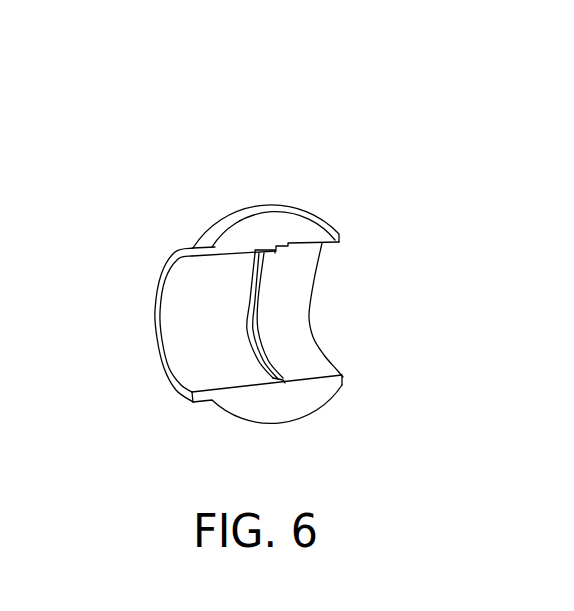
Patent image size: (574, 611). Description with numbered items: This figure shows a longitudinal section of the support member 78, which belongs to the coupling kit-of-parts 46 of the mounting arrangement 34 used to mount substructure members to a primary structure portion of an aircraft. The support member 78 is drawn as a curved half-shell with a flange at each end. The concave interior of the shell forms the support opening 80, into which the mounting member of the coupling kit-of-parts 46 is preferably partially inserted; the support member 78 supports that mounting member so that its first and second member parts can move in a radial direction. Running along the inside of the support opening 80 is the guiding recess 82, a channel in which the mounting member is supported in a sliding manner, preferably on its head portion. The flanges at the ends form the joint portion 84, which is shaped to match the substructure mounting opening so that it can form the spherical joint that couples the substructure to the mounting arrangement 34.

The mounting arrangement 34 is at (140, 50).
The coupling kit-of-parts 46 is at (203, 85).
The support member 78 is at (272, 170).
The support opening 80 is at (283, 312).
The guiding recess 82 is at (262, 363).
The joint portion 84 is at (227, 247).